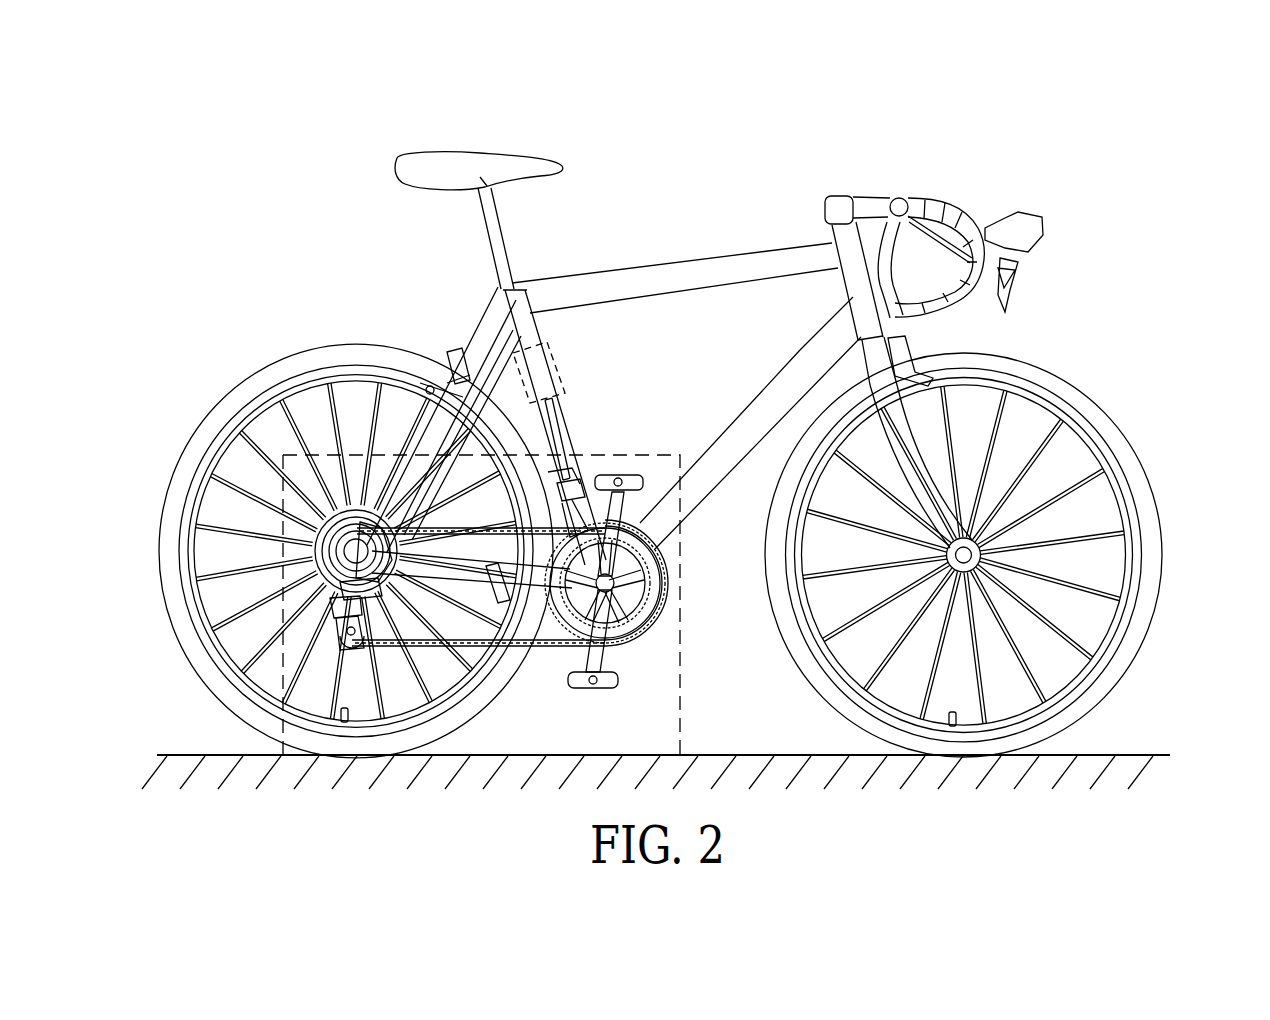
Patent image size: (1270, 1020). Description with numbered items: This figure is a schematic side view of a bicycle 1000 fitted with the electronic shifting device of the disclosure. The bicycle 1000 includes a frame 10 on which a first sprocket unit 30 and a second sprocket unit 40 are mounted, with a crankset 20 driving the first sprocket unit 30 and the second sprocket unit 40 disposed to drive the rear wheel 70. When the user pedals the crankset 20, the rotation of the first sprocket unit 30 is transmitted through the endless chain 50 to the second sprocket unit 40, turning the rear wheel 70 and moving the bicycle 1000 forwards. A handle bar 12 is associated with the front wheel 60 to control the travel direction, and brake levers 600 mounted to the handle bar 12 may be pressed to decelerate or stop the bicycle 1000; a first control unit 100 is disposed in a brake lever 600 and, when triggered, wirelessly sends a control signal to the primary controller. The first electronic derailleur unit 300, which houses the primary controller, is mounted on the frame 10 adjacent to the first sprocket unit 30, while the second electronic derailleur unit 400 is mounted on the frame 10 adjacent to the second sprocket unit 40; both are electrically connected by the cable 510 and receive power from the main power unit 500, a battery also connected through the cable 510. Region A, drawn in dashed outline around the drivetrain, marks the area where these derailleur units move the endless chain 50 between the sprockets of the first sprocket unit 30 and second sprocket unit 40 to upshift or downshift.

The bicycle 1000 is at (1090, 69).
The frame 10 is at (660, 280).
The handle bar 12 is at (938, 207).
The crankset 20 is at (617, 678).
The first sprocket unit 30 is at (637, 560).
The second sprocket unit 40 is at (352, 512).
The endless chain 50 is at (543, 643).
The front wheel 60 is at (1135, 478).
The rear wheel 70 is at (200, 443).
The first control unit 100 is at (1016, 283).
The first electronic derailleur unit 300 is at (570, 490).
The second electronic derailleur unit 400 is at (330, 618).
The main power unit 500 is at (550, 353).
The cable 510 is at (557, 427).
The brake lever 600 is at (1021, 264).
The region A is at (682, 622).